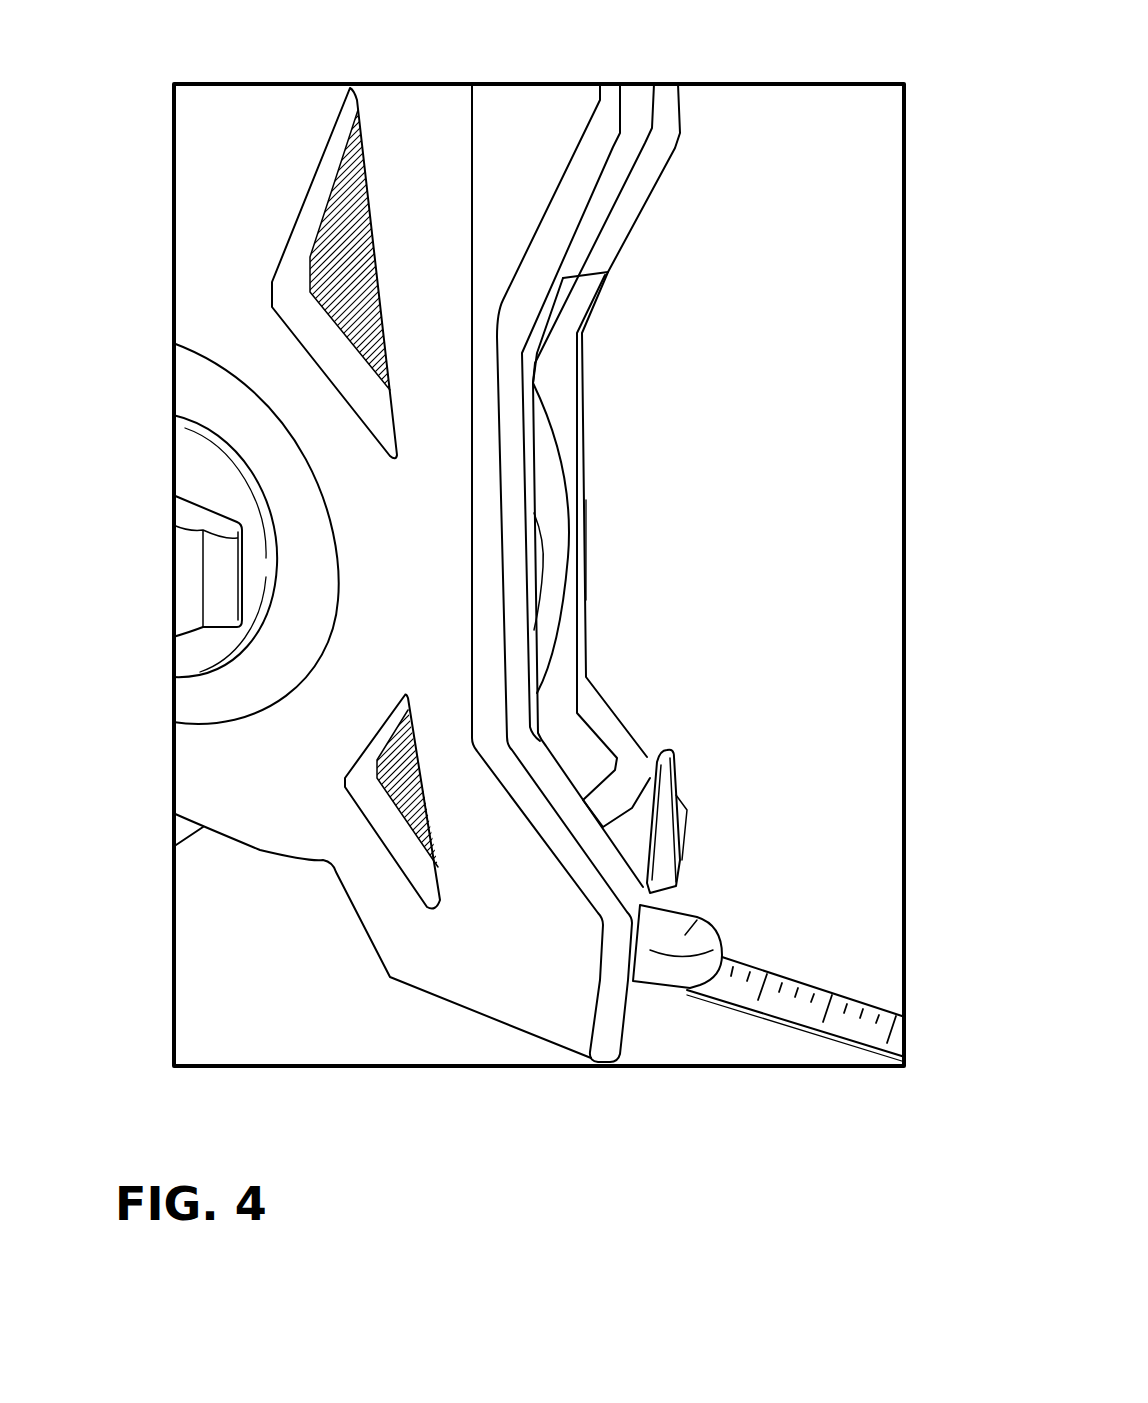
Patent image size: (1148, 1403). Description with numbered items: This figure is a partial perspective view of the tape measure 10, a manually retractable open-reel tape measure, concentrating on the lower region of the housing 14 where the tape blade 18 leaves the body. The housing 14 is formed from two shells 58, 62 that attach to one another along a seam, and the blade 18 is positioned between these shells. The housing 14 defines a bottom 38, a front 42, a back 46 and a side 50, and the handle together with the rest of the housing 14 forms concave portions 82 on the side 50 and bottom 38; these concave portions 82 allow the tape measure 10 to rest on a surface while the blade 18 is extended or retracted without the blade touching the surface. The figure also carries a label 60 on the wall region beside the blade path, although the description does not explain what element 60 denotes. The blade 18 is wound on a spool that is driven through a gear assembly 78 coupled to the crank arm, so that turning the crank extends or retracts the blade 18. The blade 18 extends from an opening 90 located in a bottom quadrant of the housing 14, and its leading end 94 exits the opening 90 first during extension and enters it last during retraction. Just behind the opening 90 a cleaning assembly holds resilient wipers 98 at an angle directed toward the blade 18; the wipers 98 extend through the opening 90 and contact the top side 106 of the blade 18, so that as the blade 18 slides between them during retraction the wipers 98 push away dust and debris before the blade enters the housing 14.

The tape measure 10 is at (652, 60).
The housing 14 is at (425, 130).
The tape blade 18 is at (767, 968).
The bottom 38 is at (402, 993).
The front 42 is at (205, 288).
The back 46 is at (582, 377).
The side 50 is at (545, 222).
The shell 58 is at (673, 122).
The recess 60 is at (542, 490).
The shell 62 is at (613, 178).
The gear assembly 78 is at (217, 660).
The concave portions 82 is at (603, 562).
The opening 90 is at (645, 893).
The leading end 94 is at (788, 1022).
The resilient wipers 98 is at (687, 937).
The top side 106 is at (807, 995).